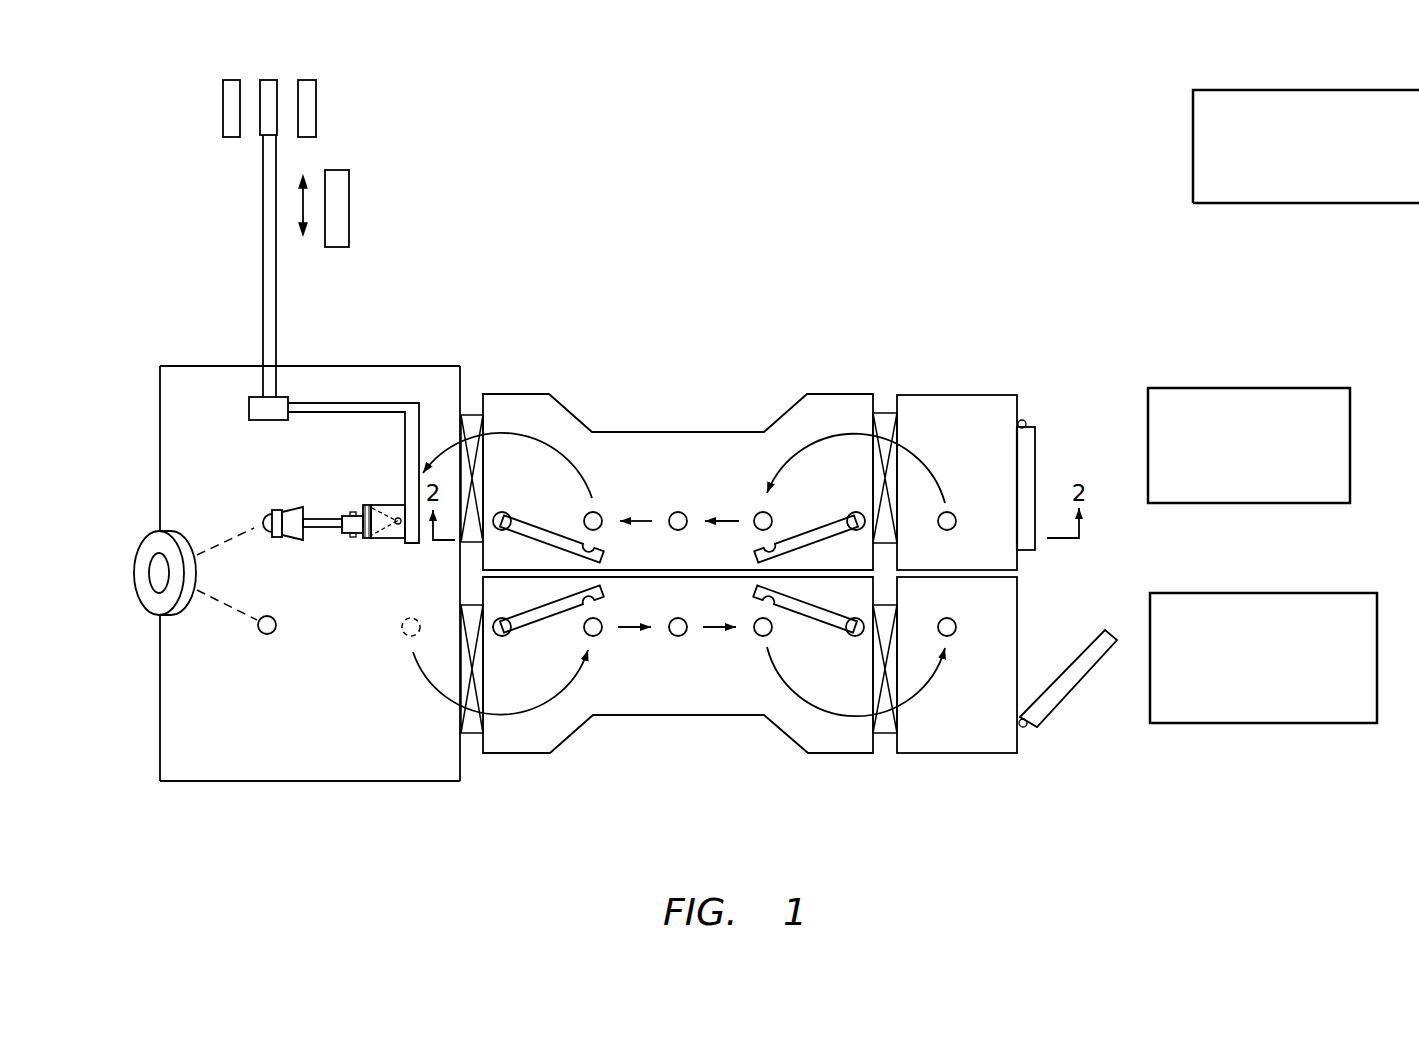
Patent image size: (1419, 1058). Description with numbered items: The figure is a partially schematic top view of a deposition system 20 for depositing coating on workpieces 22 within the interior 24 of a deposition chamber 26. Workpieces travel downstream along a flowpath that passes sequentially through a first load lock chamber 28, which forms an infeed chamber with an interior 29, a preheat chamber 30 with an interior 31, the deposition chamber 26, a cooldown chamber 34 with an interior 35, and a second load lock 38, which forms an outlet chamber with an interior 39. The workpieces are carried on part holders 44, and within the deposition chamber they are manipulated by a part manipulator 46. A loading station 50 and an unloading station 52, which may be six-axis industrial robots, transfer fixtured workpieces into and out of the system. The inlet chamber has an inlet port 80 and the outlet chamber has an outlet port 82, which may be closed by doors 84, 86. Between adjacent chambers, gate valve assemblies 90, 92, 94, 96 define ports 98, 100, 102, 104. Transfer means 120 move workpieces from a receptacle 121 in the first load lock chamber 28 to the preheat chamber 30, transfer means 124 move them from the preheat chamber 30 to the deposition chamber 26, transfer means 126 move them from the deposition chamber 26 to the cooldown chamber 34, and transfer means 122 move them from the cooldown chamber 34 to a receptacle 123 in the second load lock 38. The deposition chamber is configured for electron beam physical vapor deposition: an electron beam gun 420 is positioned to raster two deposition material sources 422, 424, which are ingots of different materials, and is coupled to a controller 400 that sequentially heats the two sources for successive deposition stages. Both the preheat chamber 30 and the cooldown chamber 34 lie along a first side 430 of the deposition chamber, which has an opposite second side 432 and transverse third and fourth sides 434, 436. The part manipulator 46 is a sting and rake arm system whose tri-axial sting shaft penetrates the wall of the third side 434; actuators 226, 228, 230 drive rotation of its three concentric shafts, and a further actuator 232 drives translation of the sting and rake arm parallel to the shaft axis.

The deposition system 20 is at (730, 262).
The workpieces 22 is at (323, 524).
The interior 24 is at (301, 576).
The deposition chamber 26 is at (310, 350).
The first load lock chamber 28 is at (1006, 442).
The interior 29 is at (976, 440).
The preheat chamber 30 is at (793, 384).
The interior 31 is at (666, 483).
The cooldown chamber 34 is at (742, 735).
The interior 35 is at (711, 703).
The second load lock 38 is at (1007, 709).
The interior 39 is at (963, 741).
The part holders 44 is at (374, 499).
The part manipulator 46 is at (296, 148).
The loading station 50 is at (1233, 484).
The unloading station 52 is at (1247, 700).
The inlet port 80 is at (1019, 452).
The outlet port 82 is at (1025, 641).
The door 84 is at (1028, 460).
The door 86 is at (1070, 683).
The gate valve assembly 90 is at (887, 413).
The gate valve assembly 92 is at (888, 735).
The gate valve assembly 94 is at (473, 414).
The gate valve assembly 96 is at (473, 729).
The port 98 is at (894, 477).
The port 100 is at (893, 672).
The port 102 is at (486, 426).
The port 104 is at (463, 673).
The transfer means 120 is at (804, 519).
The receptacle 121 is at (957, 519).
The transfer means 122 is at (815, 631).
The receptacle 123 is at (957, 625).
The transfer means 124 is at (552, 517).
The transfer means 126 is at (542, 631).
The actuator 226 is at (270, 82).
The actuator 228 is at (229, 92).
The actuator 230 is at (310, 90).
The actuator 232 is at (335, 195).
The controller 400 is at (1273, 184).
The electron beam gun 420 is at (122, 597).
The deposition material source 422 is at (266, 508).
The deposition material source 424 is at (268, 636).
The first side 430 is at (463, 772).
The second side 432 is at (145, 763).
The third side 434 is at (408, 357).
The fourth side 436 is at (398, 793).